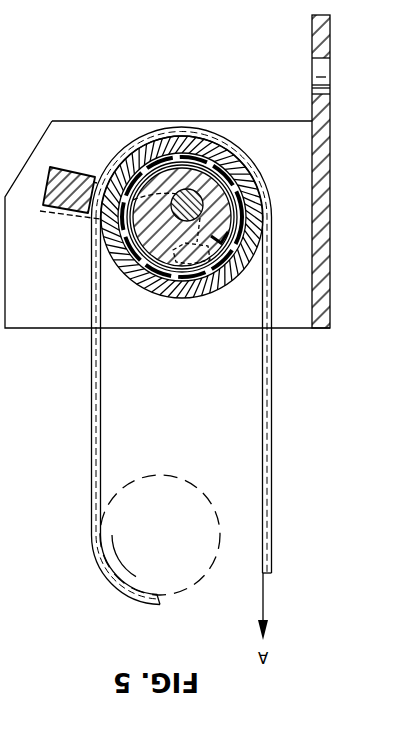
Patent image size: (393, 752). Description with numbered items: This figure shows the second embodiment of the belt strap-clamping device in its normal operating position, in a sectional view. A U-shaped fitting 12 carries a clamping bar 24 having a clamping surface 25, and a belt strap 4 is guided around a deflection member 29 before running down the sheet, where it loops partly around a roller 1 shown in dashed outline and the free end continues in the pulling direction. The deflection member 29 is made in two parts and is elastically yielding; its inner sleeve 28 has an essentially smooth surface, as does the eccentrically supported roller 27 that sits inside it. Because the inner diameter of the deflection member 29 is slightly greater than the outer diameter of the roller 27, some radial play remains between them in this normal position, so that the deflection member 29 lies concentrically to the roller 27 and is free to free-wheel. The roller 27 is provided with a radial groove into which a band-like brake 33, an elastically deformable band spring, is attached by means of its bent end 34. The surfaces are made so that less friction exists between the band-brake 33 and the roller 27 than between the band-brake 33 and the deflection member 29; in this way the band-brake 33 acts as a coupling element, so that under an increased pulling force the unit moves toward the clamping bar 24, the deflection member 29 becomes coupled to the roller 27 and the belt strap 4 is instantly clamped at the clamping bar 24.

The roller 1 is at (129, 601).
The belt strap 4 is at (90, 433).
The U-shaped fitting 12 is at (52, 312).
The clamping bar 24 is at (82, 173).
The clamping surface 25 is at (97, 182).
The roller 27 is at (188, 188).
The inner sleeve 28 is at (180, 283).
The deflection member 29 is at (213, 310).
The band-like brake 33 is at (157, 173).
The bent end 34 is at (222, 247).